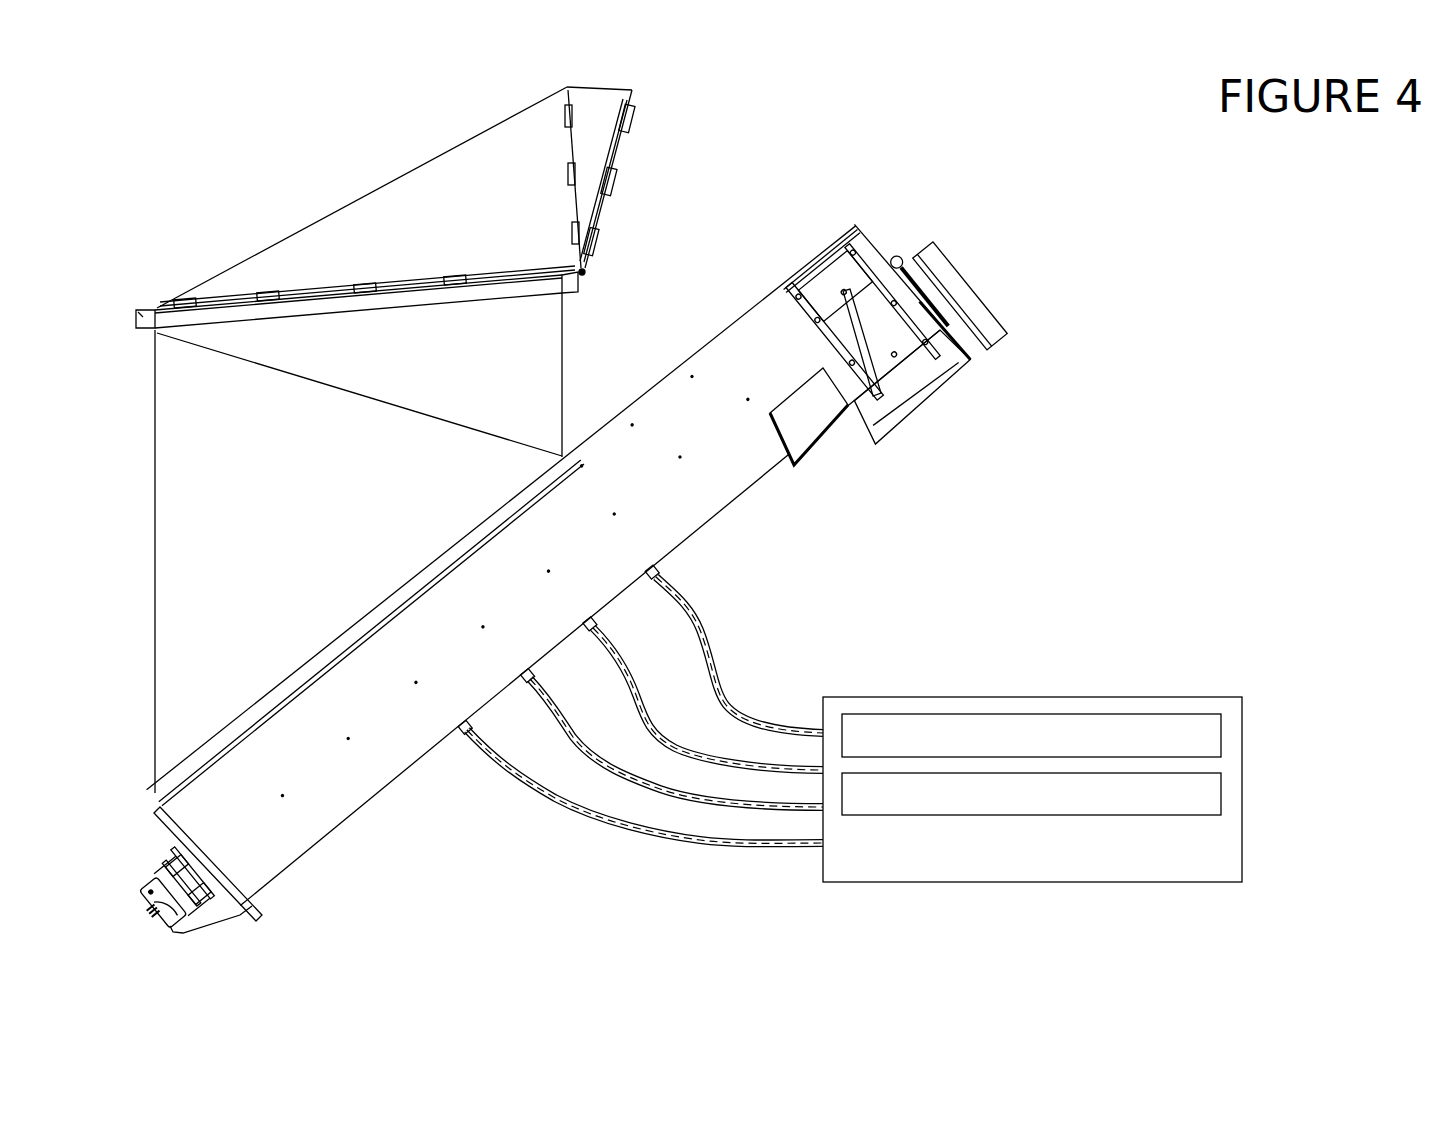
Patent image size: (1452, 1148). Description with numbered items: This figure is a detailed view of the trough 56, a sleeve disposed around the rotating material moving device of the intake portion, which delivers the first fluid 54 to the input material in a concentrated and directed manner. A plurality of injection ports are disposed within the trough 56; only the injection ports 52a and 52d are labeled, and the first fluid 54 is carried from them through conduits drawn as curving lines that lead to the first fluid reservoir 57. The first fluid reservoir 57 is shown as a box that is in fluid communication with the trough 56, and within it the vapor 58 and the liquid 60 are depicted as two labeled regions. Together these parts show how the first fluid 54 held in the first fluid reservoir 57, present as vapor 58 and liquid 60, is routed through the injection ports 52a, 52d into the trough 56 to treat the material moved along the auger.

The injection port 52a is at (462, 733).
The injection port 52d is at (658, 563).
The first fluid 54 is at (697, 620).
The trough 56 is at (733, 362).
The first fluid reservoir 57 is at (1243, 855).
The vapor 58 is at (1223, 738).
The liquid 60 is at (1223, 796).